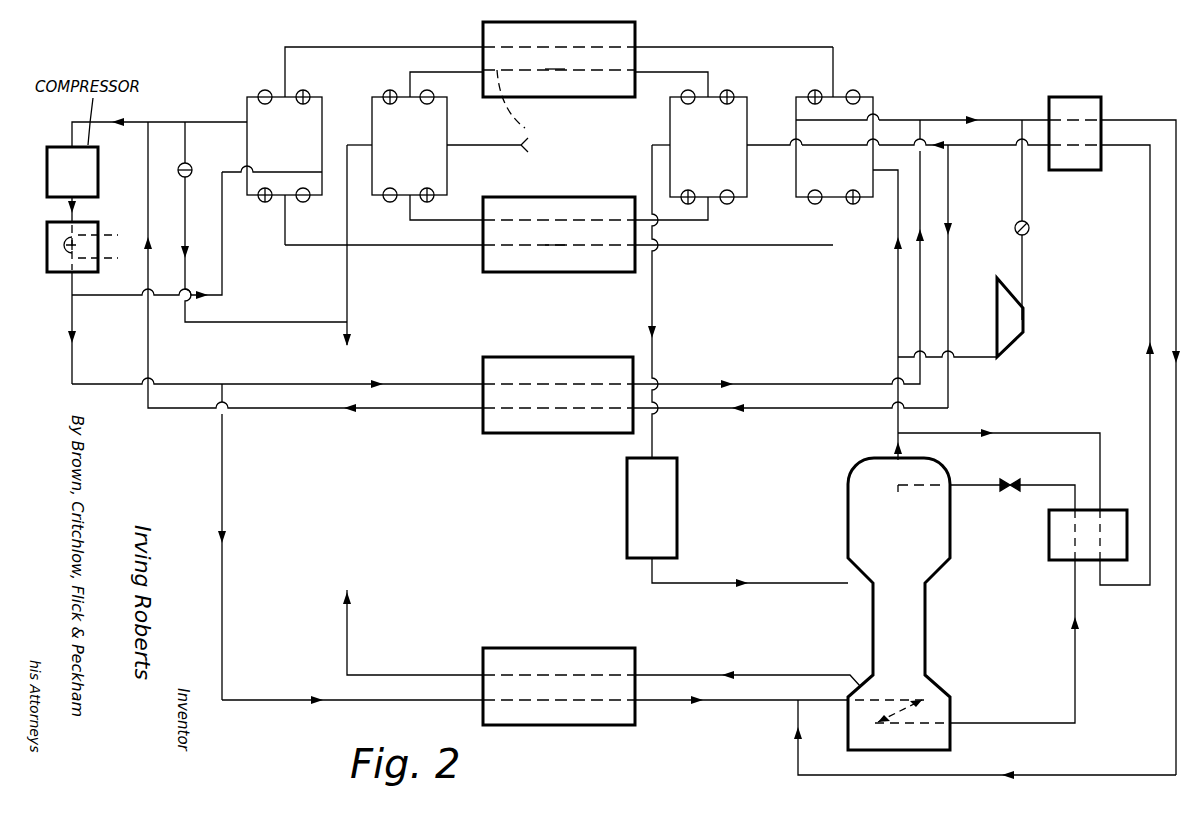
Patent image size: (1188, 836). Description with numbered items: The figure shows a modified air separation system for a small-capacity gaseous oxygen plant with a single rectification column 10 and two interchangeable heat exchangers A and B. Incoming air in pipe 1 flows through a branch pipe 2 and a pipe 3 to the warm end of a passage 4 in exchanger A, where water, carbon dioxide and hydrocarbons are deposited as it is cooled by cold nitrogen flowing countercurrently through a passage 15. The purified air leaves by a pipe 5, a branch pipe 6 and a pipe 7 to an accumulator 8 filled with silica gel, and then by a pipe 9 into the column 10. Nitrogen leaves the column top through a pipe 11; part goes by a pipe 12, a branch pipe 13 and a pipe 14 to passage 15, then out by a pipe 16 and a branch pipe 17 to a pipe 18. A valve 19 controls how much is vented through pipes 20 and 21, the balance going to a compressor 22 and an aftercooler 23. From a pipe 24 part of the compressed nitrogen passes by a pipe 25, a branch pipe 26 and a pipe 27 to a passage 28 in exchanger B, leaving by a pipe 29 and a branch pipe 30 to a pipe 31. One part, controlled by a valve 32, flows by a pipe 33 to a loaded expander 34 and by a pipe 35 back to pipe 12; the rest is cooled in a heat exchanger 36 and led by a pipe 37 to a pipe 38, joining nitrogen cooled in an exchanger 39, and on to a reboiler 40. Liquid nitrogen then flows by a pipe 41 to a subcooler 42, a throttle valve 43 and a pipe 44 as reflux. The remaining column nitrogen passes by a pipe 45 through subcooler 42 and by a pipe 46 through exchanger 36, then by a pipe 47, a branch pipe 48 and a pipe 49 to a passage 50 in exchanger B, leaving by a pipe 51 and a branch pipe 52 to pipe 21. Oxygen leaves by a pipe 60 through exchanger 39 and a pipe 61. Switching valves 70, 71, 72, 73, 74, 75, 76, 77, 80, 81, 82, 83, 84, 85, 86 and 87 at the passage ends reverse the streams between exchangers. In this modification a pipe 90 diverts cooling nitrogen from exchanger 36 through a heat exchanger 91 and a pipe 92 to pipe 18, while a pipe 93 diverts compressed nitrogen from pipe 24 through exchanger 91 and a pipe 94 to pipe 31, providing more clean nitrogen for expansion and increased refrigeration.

The pipe 1 is at (462, 145).
The branch pipe 2 is at (445, 127).
The pipe 3 is at (455, 72).
The passage 4 is at (516, 103).
The pipe 5 is at (660, 72).
The branch pipe 6 is at (672, 128).
The pipe 7 is at (655, 312).
The accumulator 8 is at (627, 500).
The pipe 9 is at (782, 583).
The rectification column 10 is at (848, 505).
The pipe 11 is at (903, 455).
The pipe 12 is at (898, 268).
The branch pipe 13 is at (873, 160).
The pipe 14 is at (758, 47).
The passage 15 is at (636, 28).
The pipe 16 is at (362, 47).
The branch pipe 17 is at (252, 128).
The pipe 18 is at (168, 122).
The valve 19 is at (192, 165).
The pipe 20 is at (188, 237).
The pipe 21 is at (349, 283).
The compressor 22 is at (68, 145).
The aftercooler 23 is at (60, 275).
The pipe 24 is at (170, 384).
The pipe 25 is at (108, 297).
The branch pipe 26 is at (322, 153).
The pipe 27 is at (385, 248).
The passage 28 is at (500, 272).
The pipe 29 is at (732, 248).
The branch pipe 30 is at (796, 165).
The pipe 31 is at (968, 120).
The valve 32 is at (1030, 228).
The pipe 33 is at (1025, 193).
The loaded expander 34 is at (997, 285).
The pipe 35 is at (975, 357).
The heat exchanger 36 is at (1078, 97).
The pipe 37 is at (1172, 293).
The pipe 38 is at (742, 703).
The heat exchanger 39 is at (535, 648).
The reboiler 40 is at (905, 715).
The pipe 41 is at (1078, 662).
The subcooler 42 is at (1047, 540).
The throttle valve 43 is at (1015, 482).
The pipe 44 is at (965, 490).
The pipe 45 is at (1060, 433).
The pipe 46 is at (1148, 298).
The pipe 47 is at (970, 145).
The branch pipe 48 is at (745, 160).
The pipe 49 is at (672, 222).
The passage 50 is at (600, 220).
The pipe 51 is at (468, 220).
The branch pipe 52 is at (375, 150).
The pipe 60 is at (765, 675).
The pipe 61 is at (428, 675).
The valve 70 is at (258, 93).
The valve 71 is at (307, 90).
The valve 72 is at (385, 92).
The valve 73 is at (435, 95).
The valve 74 is at (432, 200).
The valve 75 is at (388, 203).
The valve 76 is at (303, 203).
The valve 77 is at (262, 203).
The valve 80 is at (857, 92).
The valve 81 is at (812, 90).
The valve 82 is at (733, 92).
The valve 83 is at (681, 95).
The valve 84 is at (684, 203).
The valve 85 is at (730, 204).
The valve 86 is at (812, 204).
The valve 87 is at (855, 204).
The pipe 90 is at (950, 210).
The heat exchanger 91 is at (505, 357).
The pipe 92 is at (368, 412).
The pipe 93 is at (310, 384).
The pipe 94 is at (760, 384).